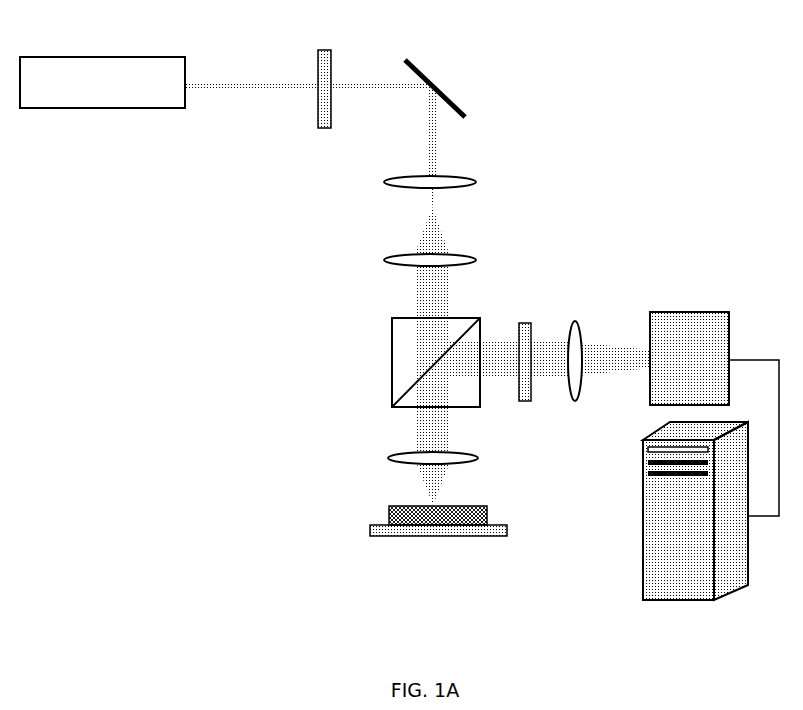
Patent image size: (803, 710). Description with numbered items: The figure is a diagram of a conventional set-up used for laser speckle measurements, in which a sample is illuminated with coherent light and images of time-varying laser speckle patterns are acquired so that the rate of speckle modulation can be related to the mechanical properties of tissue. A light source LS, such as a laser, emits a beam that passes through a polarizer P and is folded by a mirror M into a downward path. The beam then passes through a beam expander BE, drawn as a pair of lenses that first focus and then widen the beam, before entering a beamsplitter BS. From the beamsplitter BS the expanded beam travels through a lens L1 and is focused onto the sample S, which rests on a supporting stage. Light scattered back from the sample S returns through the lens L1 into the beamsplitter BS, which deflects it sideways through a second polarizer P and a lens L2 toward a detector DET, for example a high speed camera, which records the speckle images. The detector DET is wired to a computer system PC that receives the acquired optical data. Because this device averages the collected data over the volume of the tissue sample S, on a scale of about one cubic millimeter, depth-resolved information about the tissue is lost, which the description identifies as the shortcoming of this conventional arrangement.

The light source LS is at (102, 82).
The polarizer P is at (424, 212).
The mirror M is at (435, 88).
The beam expander BE is at (474, 180).
The beamsplitter BS is at (416, 362).
The lens L2 is at (576, 346).
The detector DET is at (714, 414).
The computer system PC is at (695, 511).
The lens L1 is at (447, 457).
The sample S is at (426, 510).